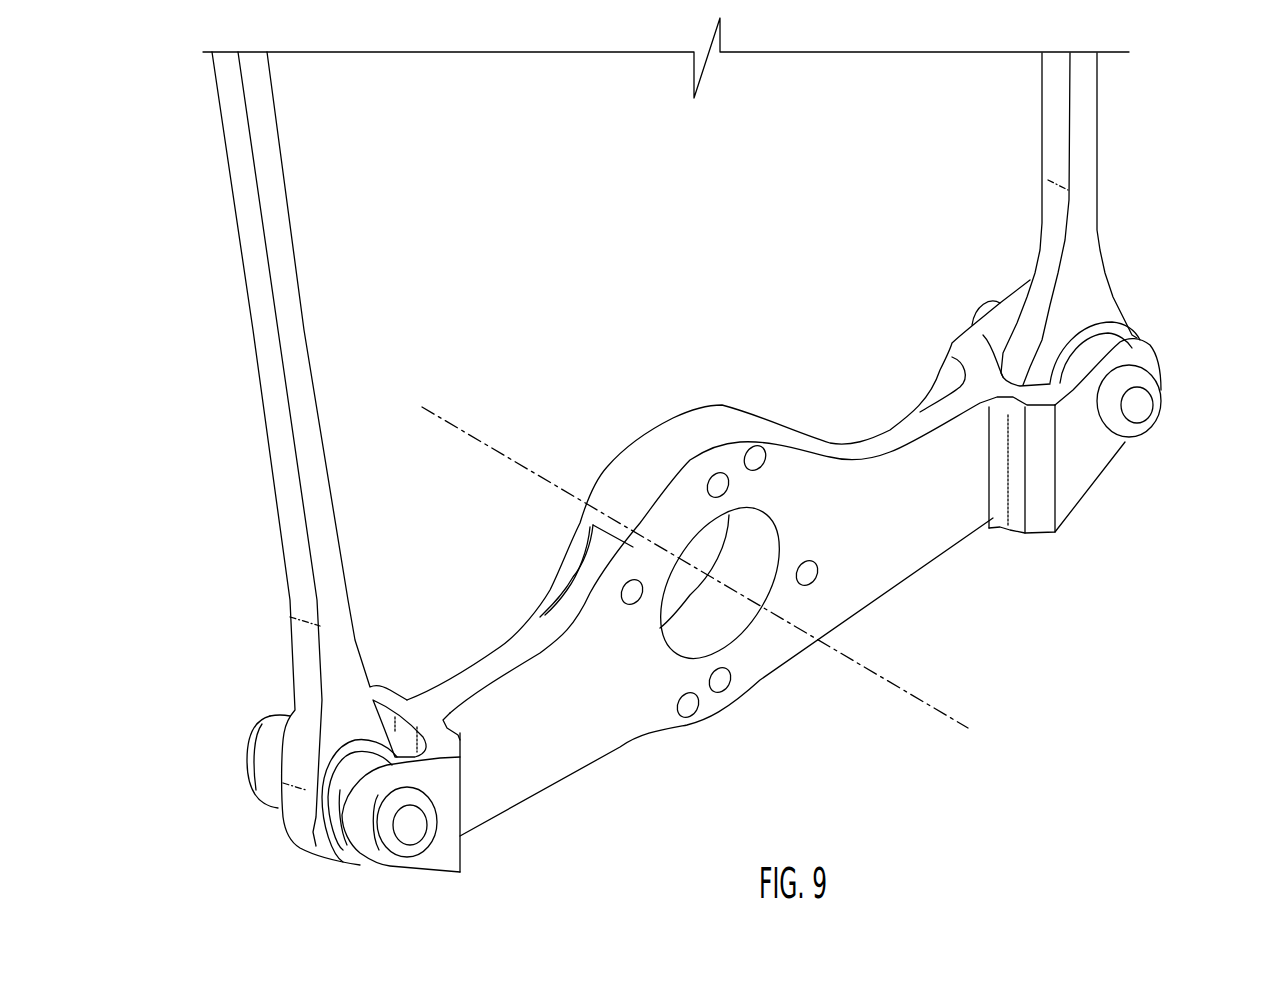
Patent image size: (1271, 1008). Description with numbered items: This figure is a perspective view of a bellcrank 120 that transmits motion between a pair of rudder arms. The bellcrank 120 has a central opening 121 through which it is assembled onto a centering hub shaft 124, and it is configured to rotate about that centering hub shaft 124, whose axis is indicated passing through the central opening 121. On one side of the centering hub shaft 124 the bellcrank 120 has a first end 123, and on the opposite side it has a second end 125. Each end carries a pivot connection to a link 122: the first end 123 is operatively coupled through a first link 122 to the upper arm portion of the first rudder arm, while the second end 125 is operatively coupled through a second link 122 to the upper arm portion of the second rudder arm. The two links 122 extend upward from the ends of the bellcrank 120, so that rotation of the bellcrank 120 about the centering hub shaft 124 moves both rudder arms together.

The bellcrank 120 is at (755, 301).
The central opening 121 is at (704, 617).
The link 122 is at (302, 370).
The first end 123 is at (443, 827).
The centering hub shaft 124 is at (940, 707).
The second end 125 is at (1085, 460).